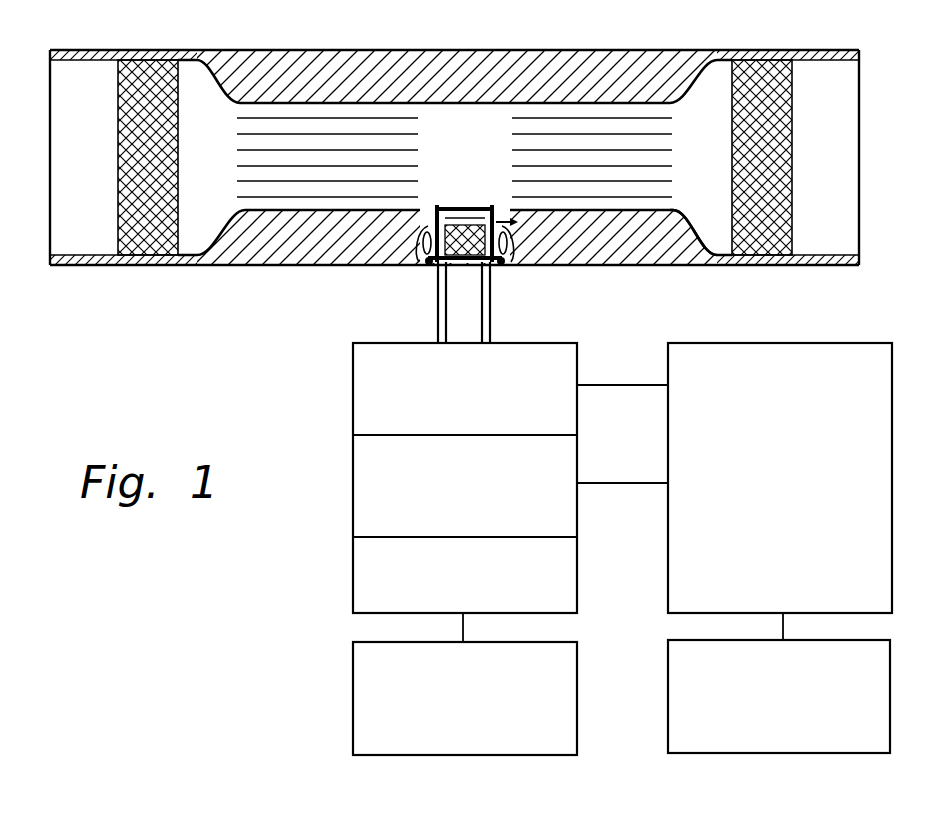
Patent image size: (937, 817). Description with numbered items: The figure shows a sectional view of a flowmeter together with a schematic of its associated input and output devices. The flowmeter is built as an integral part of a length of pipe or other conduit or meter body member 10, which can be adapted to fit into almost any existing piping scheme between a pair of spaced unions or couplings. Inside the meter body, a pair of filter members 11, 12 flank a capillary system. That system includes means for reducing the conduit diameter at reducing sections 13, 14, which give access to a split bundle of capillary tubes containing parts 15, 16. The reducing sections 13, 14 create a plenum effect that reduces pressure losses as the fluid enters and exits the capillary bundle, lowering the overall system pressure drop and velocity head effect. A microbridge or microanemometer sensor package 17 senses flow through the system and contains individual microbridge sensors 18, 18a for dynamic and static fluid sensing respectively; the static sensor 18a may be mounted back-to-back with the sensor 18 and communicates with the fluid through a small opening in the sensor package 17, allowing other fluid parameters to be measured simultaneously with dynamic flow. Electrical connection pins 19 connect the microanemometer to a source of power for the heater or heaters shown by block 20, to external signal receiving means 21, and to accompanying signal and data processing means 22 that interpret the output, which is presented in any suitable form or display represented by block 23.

The meter body member 10 is at (103, 42).
The filter member 11 is at (131, 247).
The filter member 12 is at (768, 230).
The reducing section 13 is at (193, 220).
The reducing section 14 is at (703, 213).
The capillary tube bundle part 15 is at (253, 186).
The capillary tube bundle part 16 is at (587, 130).
The sensor package 17 is at (512, 262).
The microbridge sensor 18 is at (470, 205).
The microbridge sensor 18a is at (418, 262).
The pins 19 is at (438, 316).
The source of power 20 is at (353, 700).
The external signal receiving means 21 is at (353, 553).
The signal and data processing means 22 is at (668, 552).
The output 23 is at (668, 702).